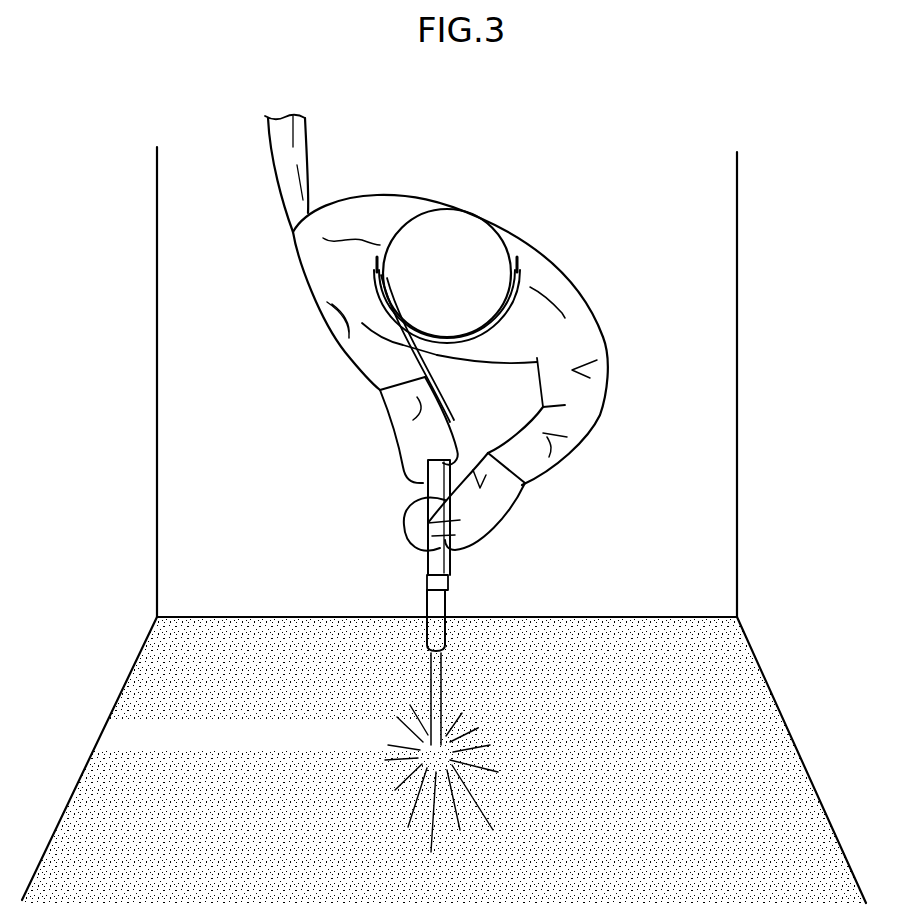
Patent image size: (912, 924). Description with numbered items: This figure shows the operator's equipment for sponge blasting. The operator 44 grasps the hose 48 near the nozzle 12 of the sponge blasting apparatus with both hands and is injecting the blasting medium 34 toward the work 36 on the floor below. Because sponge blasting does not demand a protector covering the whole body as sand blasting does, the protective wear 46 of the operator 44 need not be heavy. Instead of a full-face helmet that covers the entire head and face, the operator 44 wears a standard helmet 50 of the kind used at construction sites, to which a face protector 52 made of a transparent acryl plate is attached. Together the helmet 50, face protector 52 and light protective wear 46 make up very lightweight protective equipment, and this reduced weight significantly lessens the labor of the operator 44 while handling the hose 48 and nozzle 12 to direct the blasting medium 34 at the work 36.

The nozzle 12 is at (432, 605).
The blasting medium 34 is at (427, 703).
The work 36 is at (263, 737).
The operator 44 is at (410, 176).
The protective wear 46 is at (333, 280).
The hose 48 is at (433, 483).
The helmet 50 is at (470, 240).
The face protector 52 is at (475, 344).